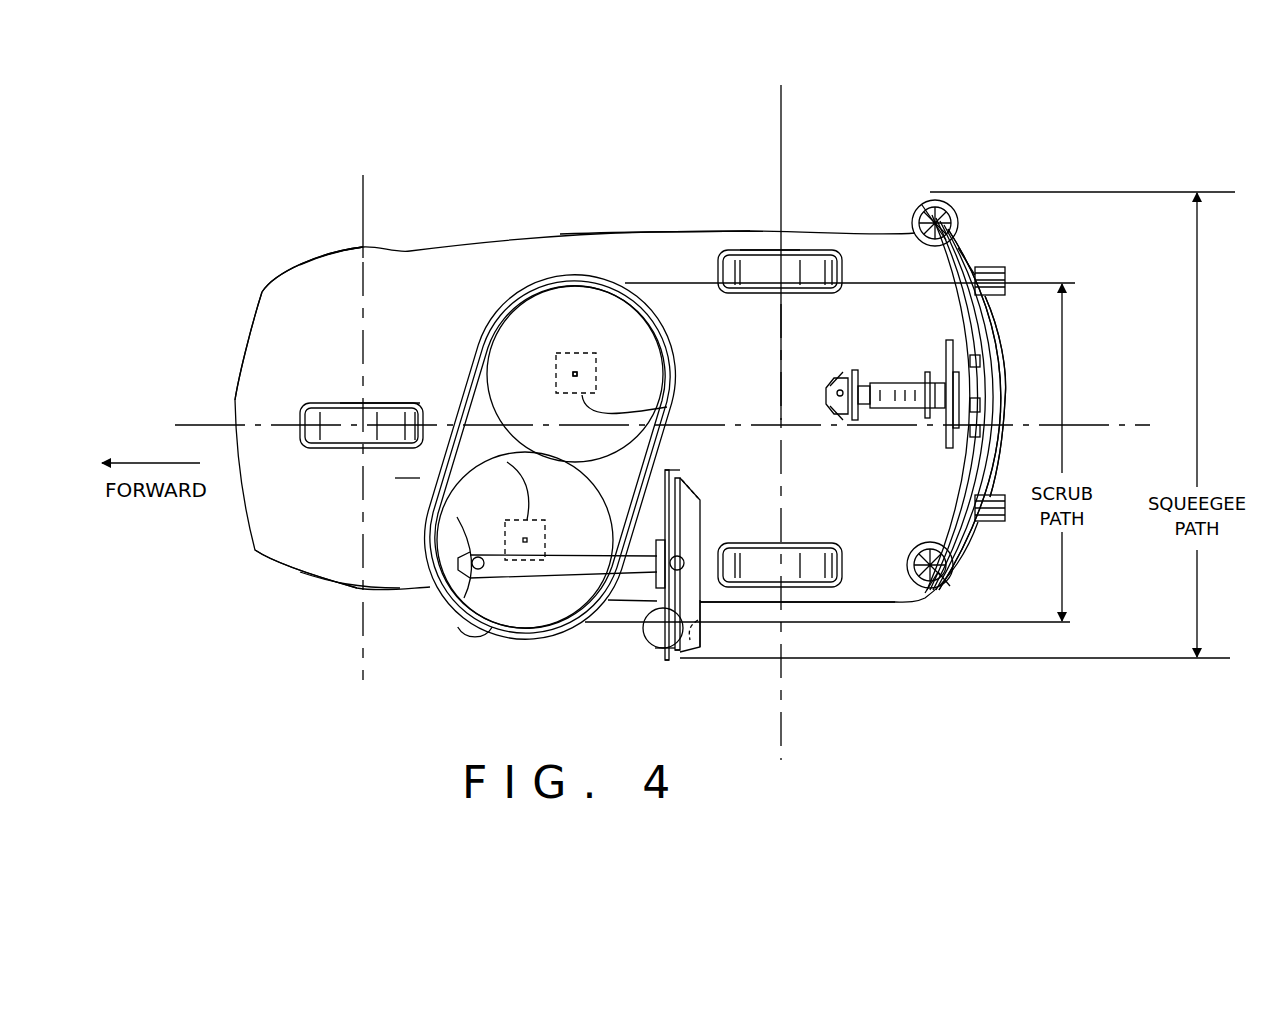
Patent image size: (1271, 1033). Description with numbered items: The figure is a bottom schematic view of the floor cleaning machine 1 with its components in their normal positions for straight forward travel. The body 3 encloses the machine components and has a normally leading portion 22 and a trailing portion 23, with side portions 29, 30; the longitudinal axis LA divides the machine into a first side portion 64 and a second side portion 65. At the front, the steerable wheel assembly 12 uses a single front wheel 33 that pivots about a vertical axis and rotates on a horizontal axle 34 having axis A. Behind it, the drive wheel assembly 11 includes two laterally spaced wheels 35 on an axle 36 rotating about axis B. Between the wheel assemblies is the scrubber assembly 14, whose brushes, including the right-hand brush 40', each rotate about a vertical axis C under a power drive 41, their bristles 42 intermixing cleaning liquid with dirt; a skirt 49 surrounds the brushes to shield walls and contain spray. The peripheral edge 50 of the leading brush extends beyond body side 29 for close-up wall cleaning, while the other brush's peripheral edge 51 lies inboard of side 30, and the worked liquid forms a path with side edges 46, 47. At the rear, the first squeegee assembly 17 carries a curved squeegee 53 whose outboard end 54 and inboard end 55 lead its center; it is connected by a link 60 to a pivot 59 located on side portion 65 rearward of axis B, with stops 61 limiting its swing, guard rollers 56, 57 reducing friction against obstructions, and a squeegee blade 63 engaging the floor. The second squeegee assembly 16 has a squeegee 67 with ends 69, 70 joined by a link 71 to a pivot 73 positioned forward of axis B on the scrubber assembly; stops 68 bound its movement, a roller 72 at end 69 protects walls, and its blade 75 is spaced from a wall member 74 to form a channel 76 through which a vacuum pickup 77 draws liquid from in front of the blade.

The floor cleaning machine 1 is at (287, 243).
The body 3 is at (262, 298).
The drive wheel assembly 11 is at (767, 243).
The steerable wheel assembly 12 is at (298, 396).
The scrubber assembly 14 is at (393, 479).
The second squeegee assembly 16 is at (692, 477).
The first squeegee assembly 17 is at (970, 196).
The leading portion 22 is at (262, 290).
The trailing portion 23 is at (1005, 380).
The body side portion 29 is at (350, 588).
The body side portion 30 is at (650, 233).
The front wheel 33 is at (392, 402).
The axle 34 is at (357, 402).
The drive wheels 35 is at (845, 268).
The axle 36 is at (780, 362).
The right-hand scrubber brush 40' is at (525, 556).
The power drive 41 is at (667, 407).
The bristles 42 is at (548, 305).
The side edge of liquid path 46 is at (860, 622).
The side edge of liquid path 47 is at (1012, 280).
The skirt 49 is at (488, 347).
The peripheral edge 50 is at (495, 640).
The peripheral edge 51 is at (612, 285).
The squeegee 53 is at (970, 238).
The outboard end 54 is at (930, 592).
The inboard end 55 is at (925, 205).
The guard roller 56 is at (950, 200).
The guard roller 57 is at (952, 447).
The pivot 59 is at (835, 385).
The link 60 is at (905, 407).
The stops 61 is at (845, 372).
The squeegee blade 63 is at (950, 585).
The first side portion 64 is at (300, 548).
The second side portion 65 is at (332, 305).
The squeegee 67 is at (705, 501).
The stops 68 is at (457, 517).
The outboard end 69 is at (666, 663).
The end 70 is at (686, 468).
The link 71 is at (530, 640).
The roller 72 is at (700, 630).
The pivot 73 is at (456, 558).
The wall member 74 is at (660, 648).
The squeegee blade 75 is at (672, 660).
The channel 76 is at (648, 632).
The vacuum pickup 77 is at (680, 558).
The axis A is at (363, 668).
The axis B is at (781, 130).
The brush axis C is at (577, 374).
The longitudinal axis LA is at (1115, 425).